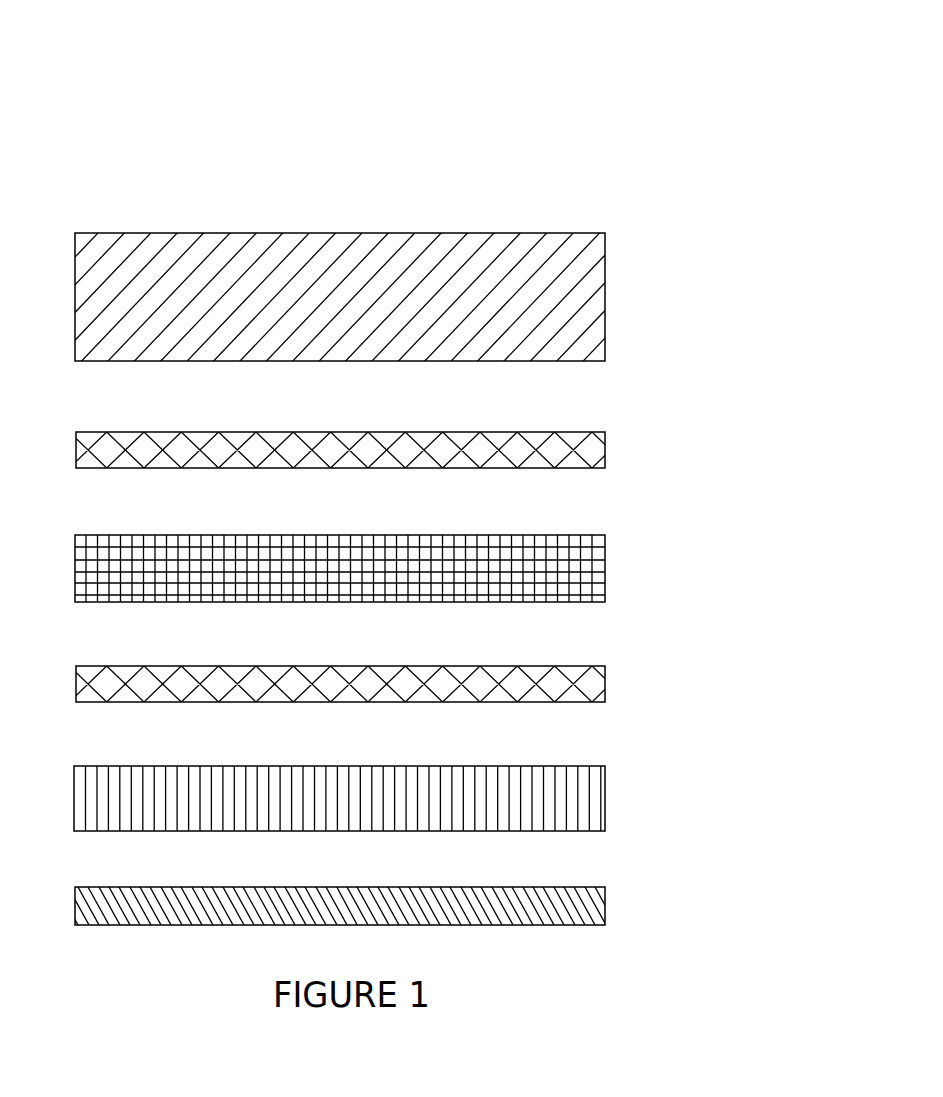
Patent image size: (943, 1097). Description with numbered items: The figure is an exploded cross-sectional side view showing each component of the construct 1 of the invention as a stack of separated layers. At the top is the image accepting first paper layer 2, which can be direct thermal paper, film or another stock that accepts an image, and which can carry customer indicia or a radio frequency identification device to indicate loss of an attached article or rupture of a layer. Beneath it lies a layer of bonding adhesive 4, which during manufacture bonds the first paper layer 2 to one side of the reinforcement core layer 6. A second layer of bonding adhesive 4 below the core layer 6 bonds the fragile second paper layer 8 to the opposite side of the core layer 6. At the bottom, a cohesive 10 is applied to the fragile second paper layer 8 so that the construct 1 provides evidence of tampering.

The construct 1 is at (486, 151).
The first paper layer 2 is at (568, 305).
The bonding adhesive 4 is at (565, 455).
The reinforcement core layer 6 is at (565, 578).
The fragile second paper layer 8 is at (563, 801).
The cohesive 10 is at (567, 910).